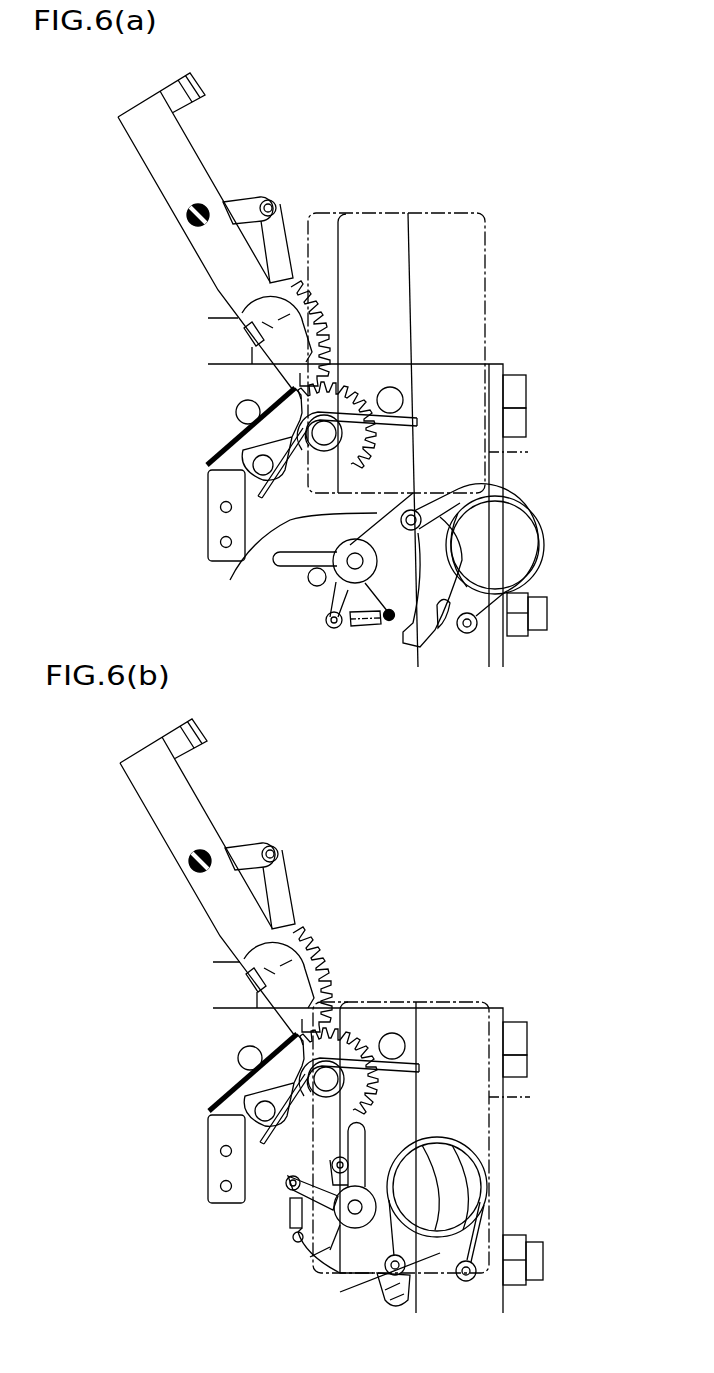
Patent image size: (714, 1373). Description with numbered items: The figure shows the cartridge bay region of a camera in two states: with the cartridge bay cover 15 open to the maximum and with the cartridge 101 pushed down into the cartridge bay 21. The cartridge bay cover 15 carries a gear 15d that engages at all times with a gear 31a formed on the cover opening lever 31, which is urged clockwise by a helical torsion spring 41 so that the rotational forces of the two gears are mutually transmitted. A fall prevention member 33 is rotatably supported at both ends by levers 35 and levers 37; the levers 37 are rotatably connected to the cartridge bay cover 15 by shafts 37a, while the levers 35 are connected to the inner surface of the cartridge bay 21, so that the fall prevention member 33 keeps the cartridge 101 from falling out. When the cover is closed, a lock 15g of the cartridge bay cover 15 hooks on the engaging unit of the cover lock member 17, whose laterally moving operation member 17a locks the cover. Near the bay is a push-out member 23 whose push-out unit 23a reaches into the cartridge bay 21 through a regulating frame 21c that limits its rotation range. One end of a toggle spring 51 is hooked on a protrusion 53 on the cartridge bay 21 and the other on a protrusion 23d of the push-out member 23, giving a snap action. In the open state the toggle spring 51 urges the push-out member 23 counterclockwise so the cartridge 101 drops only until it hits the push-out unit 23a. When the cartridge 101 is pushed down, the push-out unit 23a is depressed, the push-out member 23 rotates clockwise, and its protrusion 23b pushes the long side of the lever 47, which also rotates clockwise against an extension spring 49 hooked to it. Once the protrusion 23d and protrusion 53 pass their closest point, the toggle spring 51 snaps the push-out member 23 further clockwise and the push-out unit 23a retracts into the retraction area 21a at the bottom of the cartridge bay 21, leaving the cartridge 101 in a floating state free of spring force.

In FIG. 6A, the cartridge bay cover 15 is at (158, 167).
In FIG. 6B, the cartridge bay cover 15 is at (207, 877).
In FIG. 6A, the gear 15d is at (322, 290).
In FIG. 6B, the gear 15d is at (318, 943).
In FIG. 6B, the lock 15g is at (232, 756).
In FIG. 6A, the cover lock member 17 is at (520, 390).
In FIG. 6B, the cover lock member 17 is at (509, 1059).
In FIG. 6A, the operation member 17a is at (547, 605).
In FIG. 6B, the operation member 17a is at (523, 1260).
In FIG. 6A, the cartridge bay 21 is at (467, 387).
In FIG. 6B, the cartridge bay 21 is at (472, 1017).
In FIG. 6B, the retraction area 21a is at (438, 1280).
In FIG. 6A, the regulating frame 21c is at (430, 628).
In FIG. 6A, the push-out member 23 is at (397, 592).
In FIG. 6B, the push-out member 23 is at (313, 1260).
In FIG. 6A, the push-out unit 23a is at (470, 483).
In FIG. 6B, the push-out unit 23a is at (387, 1287).
In FIG. 6B, the protrusion 23b is at (333, 1160).
In FIG. 6A, the protrusion 23d is at (230, 580).
In FIG. 6B, the protrusion 23d is at (380, 1280).
In FIG. 6A, the cover opening lever 31 is at (208, 447).
In FIG. 6B, the cover opening lever 31 is at (244, 1118).
In FIG. 6A, the gear 31a is at (350, 390).
In FIG. 6B, the gear 31a is at (359, 990).
In FIG. 6A, the fall prevention member 33 is at (270, 200).
In FIG. 6B, the fall prevention member 33 is at (308, 818).
In FIG. 6A, the levers 35 is at (285, 245).
In FIG. 6B, the levers 35 is at (307, 874).
In FIG. 6A, the levers 37 is at (243, 200).
In FIG. 6B, the levers 37 is at (257, 824).
In FIG. 6A, the shafts 37a is at (188, 223).
In FIG. 6B, the shafts 37a is at (200, 861).
In FIG. 6A, the helical torsion spring 41 is at (413, 392).
In FIG. 6B, the helical torsion spring 41 is at (352, 1022).
In FIG. 6A, the lever 47 is at (295, 563).
In FIG. 6B, the lever 47 is at (368, 1150).
In FIG. 6B, the extension spring 49 is at (290, 1213).
In FIG. 6A, the toggle spring 51 is at (547, 528).
In FIG. 6B, the toggle spring 51 is at (473, 1153).
In FIG. 6A, the protrusion 53 is at (475, 632).
In FIG. 6B, the protrusion 53 is at (470, 1276).
In FIG. 6A, the cartridge 101 is at (452, 212).
In FIG. 6B, the cartridge 101 is at (432, 998).